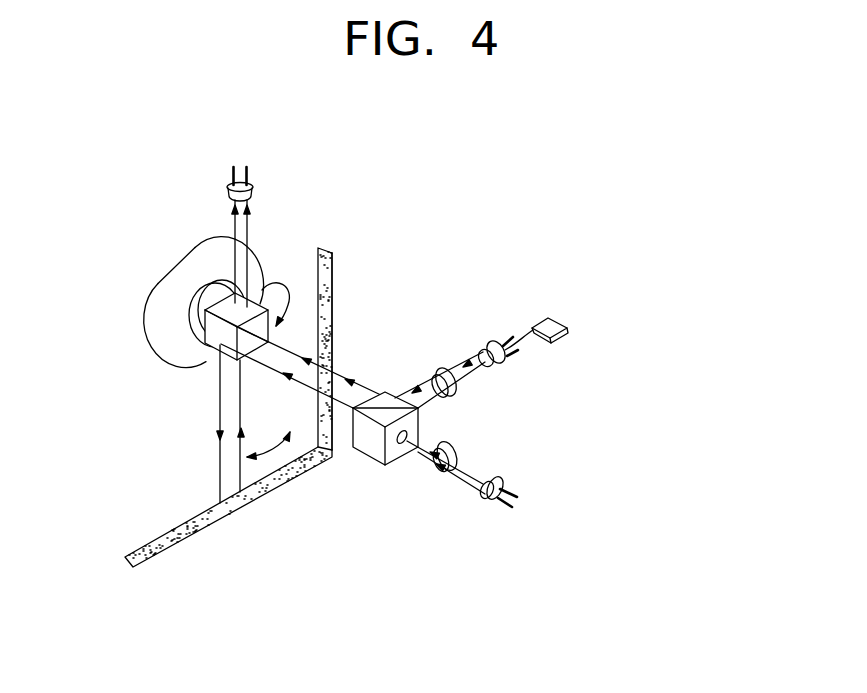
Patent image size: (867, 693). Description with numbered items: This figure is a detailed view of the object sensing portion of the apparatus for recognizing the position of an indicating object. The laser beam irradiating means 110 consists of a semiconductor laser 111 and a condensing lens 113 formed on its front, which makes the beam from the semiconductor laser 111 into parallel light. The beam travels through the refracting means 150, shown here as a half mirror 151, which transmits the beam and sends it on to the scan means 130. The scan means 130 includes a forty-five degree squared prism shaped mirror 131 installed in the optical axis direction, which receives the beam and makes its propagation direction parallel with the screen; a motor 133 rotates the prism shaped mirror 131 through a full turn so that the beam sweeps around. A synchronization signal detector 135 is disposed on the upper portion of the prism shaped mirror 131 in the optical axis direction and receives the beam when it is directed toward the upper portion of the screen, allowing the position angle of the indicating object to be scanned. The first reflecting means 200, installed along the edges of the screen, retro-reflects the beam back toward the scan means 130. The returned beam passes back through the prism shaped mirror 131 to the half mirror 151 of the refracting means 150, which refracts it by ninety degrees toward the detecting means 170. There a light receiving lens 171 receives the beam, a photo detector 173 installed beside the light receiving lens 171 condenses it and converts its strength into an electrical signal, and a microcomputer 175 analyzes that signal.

The laser beam irradiating means 110 is at (488, 516).
The semiconductor laser 111 is at (508, 484).
The condensing lens 113 is at (440, 476).
The scan means 130 is at (170, 246).
The 45° squared prism shaped mirror 131 is at (250, 298).
The motor 133 is at (152, 308).
The synchronization signal detector 135 is at (252, 190).
The refracting means 150 is at (368, 470).
The half mirror 151 is at (384, 396).
The detecting means 170 is at (482, 332).
The light receiving lens 171 is at (450, 397).
The photo detector 173 is at (499, 367).
The microcomputer 175 is at (558, 338).
The first reflecting means 200 is at (197, 543).